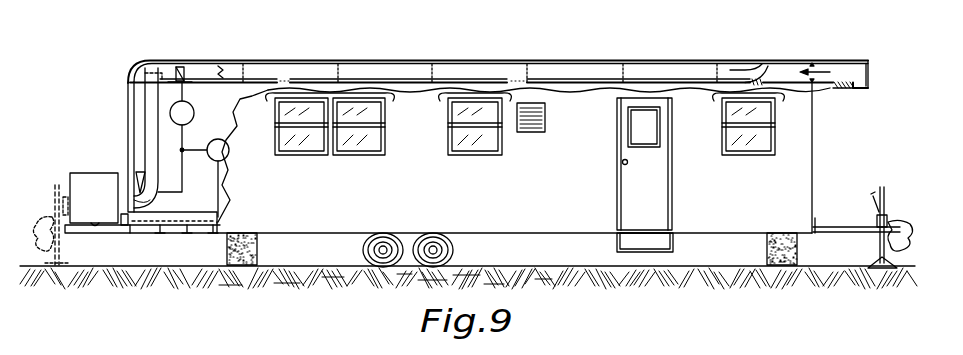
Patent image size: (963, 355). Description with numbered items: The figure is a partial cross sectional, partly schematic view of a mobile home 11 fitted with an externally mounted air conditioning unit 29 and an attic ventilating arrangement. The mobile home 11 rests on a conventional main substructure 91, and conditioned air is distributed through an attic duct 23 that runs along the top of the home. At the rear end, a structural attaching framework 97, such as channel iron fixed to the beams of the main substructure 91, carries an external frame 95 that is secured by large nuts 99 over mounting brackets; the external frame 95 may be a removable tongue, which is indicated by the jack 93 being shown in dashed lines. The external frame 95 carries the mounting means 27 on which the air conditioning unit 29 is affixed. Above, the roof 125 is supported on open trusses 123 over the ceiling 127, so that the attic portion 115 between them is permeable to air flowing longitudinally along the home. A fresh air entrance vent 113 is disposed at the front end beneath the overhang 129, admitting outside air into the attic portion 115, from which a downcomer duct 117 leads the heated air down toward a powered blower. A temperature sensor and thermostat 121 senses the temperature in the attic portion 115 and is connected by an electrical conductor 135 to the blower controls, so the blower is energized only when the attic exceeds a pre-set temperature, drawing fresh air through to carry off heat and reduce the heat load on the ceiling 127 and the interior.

The mobile home 11 is at (331, 53).
The attic duct 23 is at (360, 72).
The mounting means 27 is at (78, 228).
The air conditioning unit 29 is at (85, 163).
The main substructure 91 is at (178, 229).
The jack 93 is at (52, 213).
The external frame 95 is at (84, 222).
The structural attaching framework 97 is at (121, 235).
The nuts 99 is at (123, 225).
The fresh air entrance vent 113 is at (832, 95).
The attic portion 115 is at (782, 75).
The downcomer duct 117 is at (157, 97).
The temperature sensor and thermostat 121 is at (180, 67).
The open trusses 123 is at (628, 72).
The roof 125 is at (548, 60).
The ceiling 127 is at (407, 82).
The overhang 129 is at (868, 76).
The conductor 135 is at (187, 138).